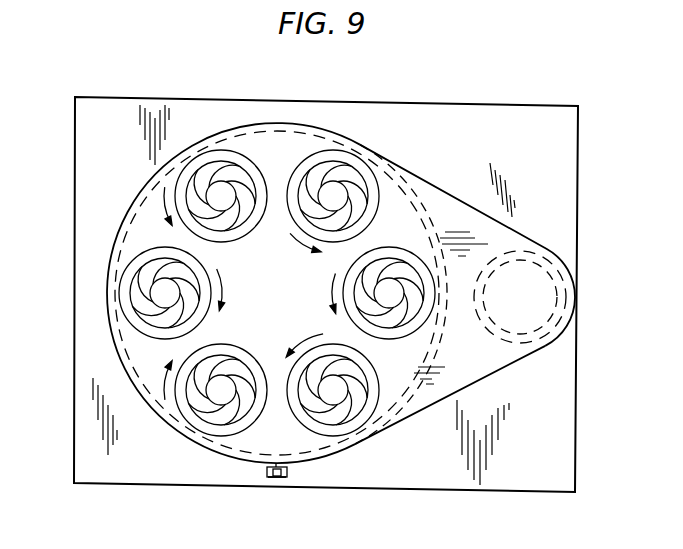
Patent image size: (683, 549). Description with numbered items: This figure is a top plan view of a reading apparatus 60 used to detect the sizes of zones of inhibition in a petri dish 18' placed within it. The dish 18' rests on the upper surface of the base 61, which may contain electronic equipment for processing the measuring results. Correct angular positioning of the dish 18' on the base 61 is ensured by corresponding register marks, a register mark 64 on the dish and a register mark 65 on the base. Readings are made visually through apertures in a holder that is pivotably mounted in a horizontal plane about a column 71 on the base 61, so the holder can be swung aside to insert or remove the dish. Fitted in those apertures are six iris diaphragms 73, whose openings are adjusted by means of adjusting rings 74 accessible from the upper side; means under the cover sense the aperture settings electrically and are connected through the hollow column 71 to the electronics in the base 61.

The reading apparatus 60 is at (452, 193).
The base 61 is at (566, 410).
The register mark 64 is at (276, 466).
The register mark 65 is at (281, 479).
The column 71 is at (556, 286).
The iris diaphragm 73 is at (208, 168).
The adjusting ring 74 is at (236, 170).
The petri dish 18' is at (450, 403).